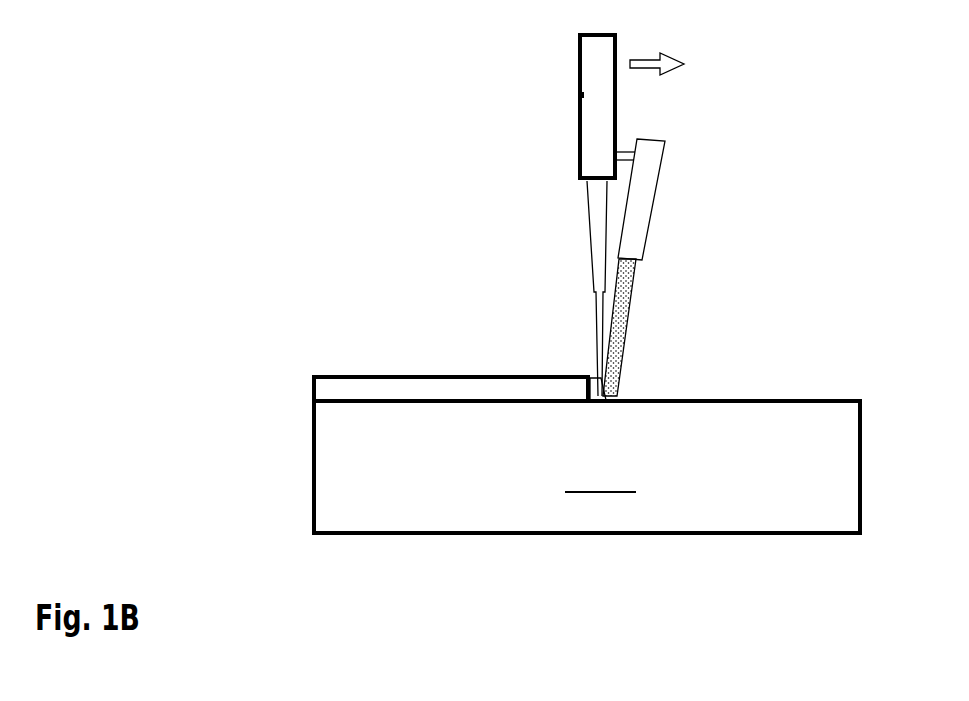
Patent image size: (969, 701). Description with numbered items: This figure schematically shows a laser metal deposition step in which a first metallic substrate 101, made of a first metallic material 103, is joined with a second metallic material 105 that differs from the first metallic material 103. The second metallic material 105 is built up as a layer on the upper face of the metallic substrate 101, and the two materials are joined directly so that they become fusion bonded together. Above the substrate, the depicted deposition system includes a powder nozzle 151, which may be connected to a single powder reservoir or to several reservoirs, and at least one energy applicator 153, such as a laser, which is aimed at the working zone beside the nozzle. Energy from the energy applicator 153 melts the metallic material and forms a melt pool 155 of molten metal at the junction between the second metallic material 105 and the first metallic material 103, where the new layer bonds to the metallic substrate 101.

The first metallic substrate 101 is at (313, 505).
The first metallic material 103 is at (600, 471).
The second metallic material 105 is at (370, 387).
The powder nozzle 151 is at (578, 78).
The energy applicator 153 is at (654, 160).
The melt pool 155 is at (600, 387).